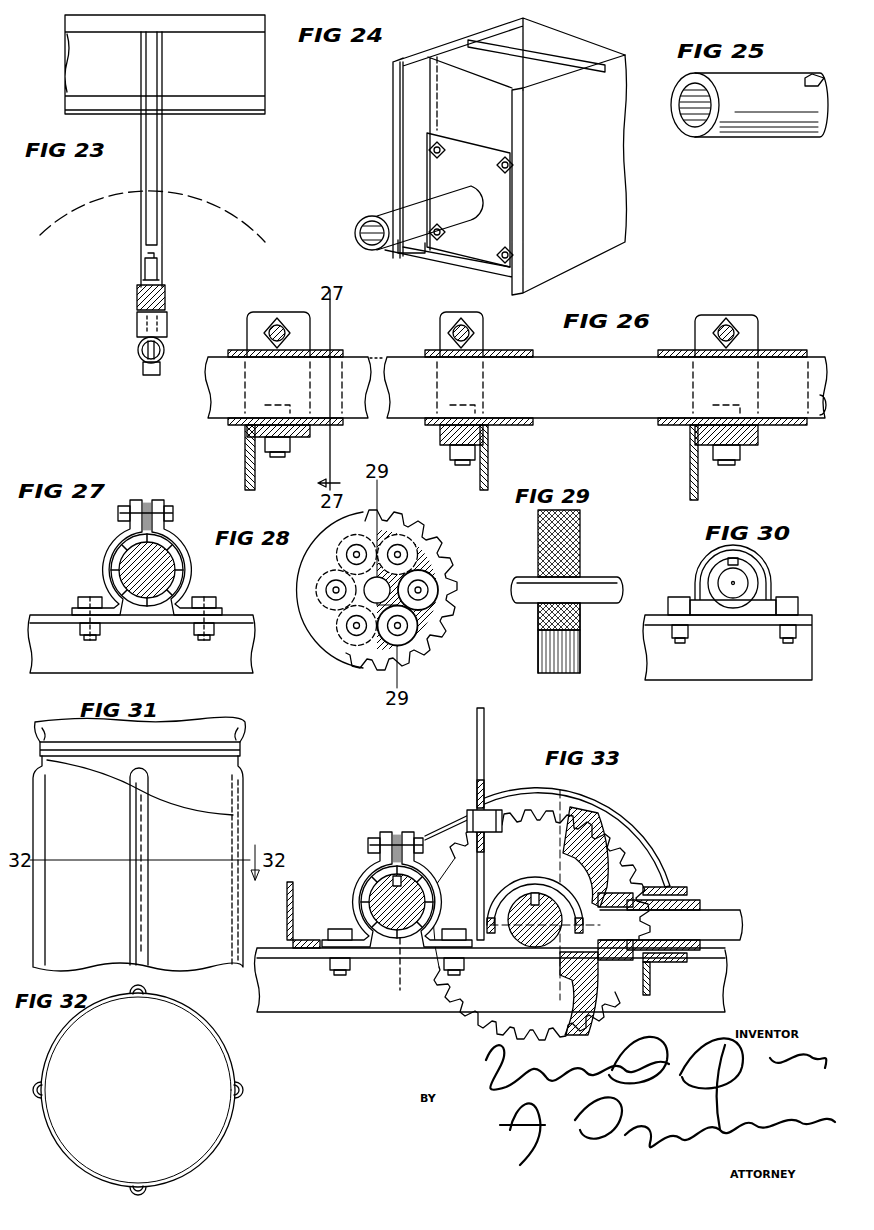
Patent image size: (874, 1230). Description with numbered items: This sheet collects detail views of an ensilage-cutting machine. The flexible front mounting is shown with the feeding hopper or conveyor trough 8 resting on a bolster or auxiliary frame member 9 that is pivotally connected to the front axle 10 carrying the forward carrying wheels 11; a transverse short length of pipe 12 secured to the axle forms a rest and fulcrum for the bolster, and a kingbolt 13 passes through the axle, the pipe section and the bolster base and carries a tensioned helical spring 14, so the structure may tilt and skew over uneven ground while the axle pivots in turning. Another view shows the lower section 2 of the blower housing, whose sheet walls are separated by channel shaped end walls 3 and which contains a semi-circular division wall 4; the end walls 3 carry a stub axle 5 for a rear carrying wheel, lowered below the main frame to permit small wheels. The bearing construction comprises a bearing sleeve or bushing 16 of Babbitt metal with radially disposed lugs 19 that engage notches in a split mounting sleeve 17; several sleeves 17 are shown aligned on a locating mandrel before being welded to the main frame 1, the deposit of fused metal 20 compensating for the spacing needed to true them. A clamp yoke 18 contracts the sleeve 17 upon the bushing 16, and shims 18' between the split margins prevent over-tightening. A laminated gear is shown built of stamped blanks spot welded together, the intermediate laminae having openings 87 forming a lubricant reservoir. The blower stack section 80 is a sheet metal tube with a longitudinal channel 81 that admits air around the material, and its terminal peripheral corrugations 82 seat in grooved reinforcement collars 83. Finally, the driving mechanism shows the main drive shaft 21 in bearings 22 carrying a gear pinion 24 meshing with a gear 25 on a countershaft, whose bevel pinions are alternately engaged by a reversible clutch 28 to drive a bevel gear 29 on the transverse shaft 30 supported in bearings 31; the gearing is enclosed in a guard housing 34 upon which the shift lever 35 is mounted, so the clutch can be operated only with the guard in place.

In FIG. 27, the angle bar members of the main frame 1 is at (50, 618).
In FIG. 30, the angle bar members of the main frame 1 is at (808, 655).
In FIG. 33, the angle bar members of the main frame 1 is at (712, 975).
In FIG. 24, the lower section of the blower housing 2 is at (448, 50).
In FIG. 24, the channel shaped end walls 3 is at (455, 100).
In FIG. 24, the semi-circular division wall 4 is at (558, 50).
In FIG. 24, the stub axle 5 is at (400, 218).
In FIG. 23, the feeding hopper or conveyor trough 8 is at (165, 64).
In FIG. 33, the feeding hopper or conveyor trough 8 is at (292, 895).
In FIG. 23, the bolster or auxiliary frame member 9 is at (162, 157).
In FIG. 23, the front axle 10 is at (138, 350).
In FIG. 23, the forward carrying wheels 11 is at (205, 203).
In FIG. 23, the transverse short length of pipe 12 is at (168, 328).
In FIG. 23, the kingbolt 13 is at (158, 262).
In FIG. 23, the tensioned helical spring 14 is at (163, 292).
In FIG. 25, the bearing sleeve or bushing 16 is at (757, 125).
In FIG. 26, the split mounting sleeve 17 is at (240, 350).
In FIG. 27, the split mounting sleeve 17 is at (183, 568).
In FIG. 27, the clamp yoke 18 is at (140, 539).
In FIG. 33, the clamp yoke 18 is at (439, 818).
In FIG. 30, the shims 18' is at (756, 580).
In FIG. 25, the radially disposed lugs 19 is at (812, 76).
In FIG. 27, the deposit of fused metal 20 is at (172, 612).
In FIG. 30, the deposit of fused metal 20 is at (752, 605).
In FIG. 33, the main drive shaft 21 is at (395, 938).
In FIG. 33, the bearings 22 is at (388, 903).
In FIG. 33, the gear pinion 24 is at (414, 973).
In FIG. 33, the gear 25 is at (530, 832).
In FIG. 33, the reversible clutch 28 is at (520, 948).
In FIG. 33, the bevel gear 29 is at (598, 812).
In FIG. 33, the transverse shaft 30 is at (720, 917).
In FIG. 33, the bearings 31 is at (680, 888).
In FIG. 33, the guard housing 34 is at (622, 830).
In FIG. 33, the shift lever 35 is at (477, 745).
In FIG. 31, the stack section 80 is at (205, 772).
In FIG. 32, the stack section 80 is at (228, 1048).
In FIG. 31, the longitudinal channel 81 is at (230, 835).
In FIG. 32, the longitudinal channel 81 is at (140, 1000).
In FIG. 31, the terminal peripheral corrugations 82 is at (224, 728).
In FIG. 31, the reinforcement collars 83 is at (245, 738).
In FIG. 28, the openings 87 is at (300, 603).